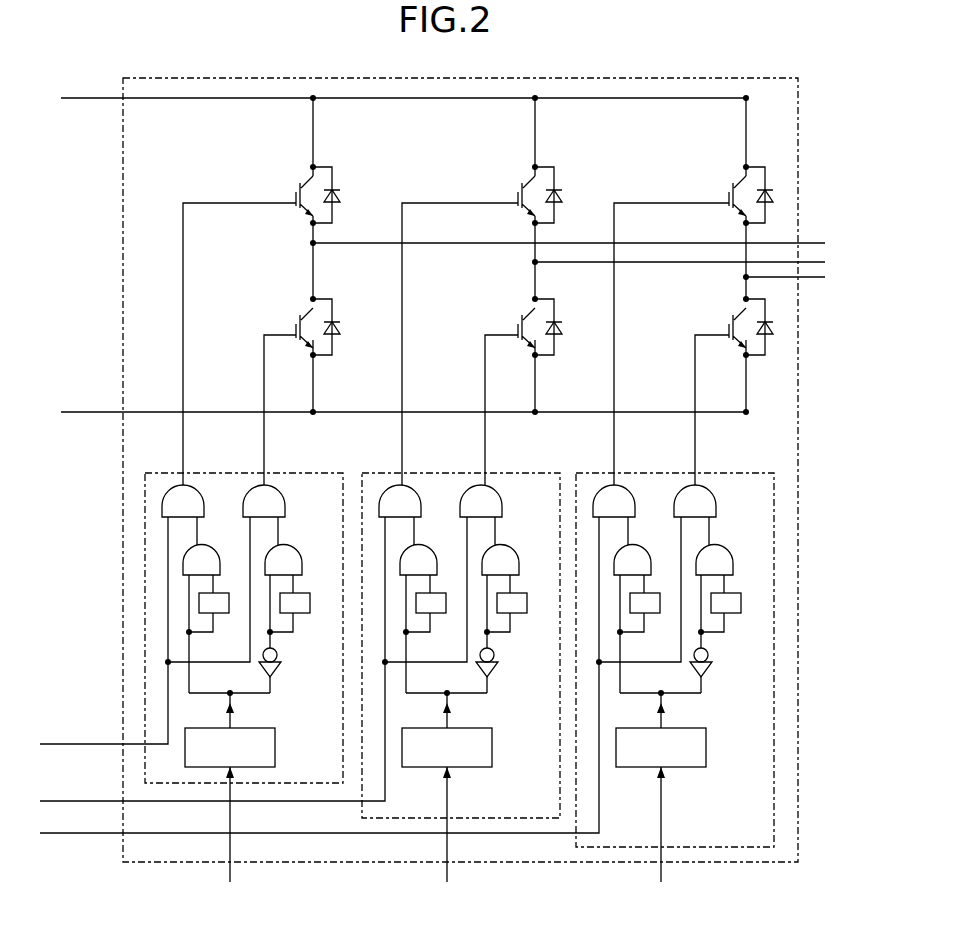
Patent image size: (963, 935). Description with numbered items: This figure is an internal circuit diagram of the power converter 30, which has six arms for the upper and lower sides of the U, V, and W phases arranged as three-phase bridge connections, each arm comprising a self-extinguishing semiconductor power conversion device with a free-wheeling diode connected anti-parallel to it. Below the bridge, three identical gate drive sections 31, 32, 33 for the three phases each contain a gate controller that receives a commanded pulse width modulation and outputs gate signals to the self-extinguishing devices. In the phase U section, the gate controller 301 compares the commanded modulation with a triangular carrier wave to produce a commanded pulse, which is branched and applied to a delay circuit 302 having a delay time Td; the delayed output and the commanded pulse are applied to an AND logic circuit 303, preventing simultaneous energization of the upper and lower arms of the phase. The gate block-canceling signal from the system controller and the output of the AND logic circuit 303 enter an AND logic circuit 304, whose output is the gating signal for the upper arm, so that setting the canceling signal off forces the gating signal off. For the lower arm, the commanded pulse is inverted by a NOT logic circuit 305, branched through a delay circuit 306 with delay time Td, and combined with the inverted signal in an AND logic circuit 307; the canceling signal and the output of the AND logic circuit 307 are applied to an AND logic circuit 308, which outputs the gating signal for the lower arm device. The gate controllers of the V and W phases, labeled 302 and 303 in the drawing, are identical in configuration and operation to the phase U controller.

The power converter 30 is at (799, 121).
The U-phase gate drive circuit 31 is at (318, 473).
The V-phase gate drive circuit 32 is at (532, 473).
The W-phase gate drive circuit 33 is at (750, 473).
The gate controller 301 is at (275, 748).
The delay circuit 302 is at (229, 613).
The AND logic circuit 303 is at (225, 533).
The AND logic circuit 304 is at (190, 484).
The NOT logic circuit 305 is at (279, 672).
The delay circuit 306 is at (310, 613).
The AND logic circuit 307 is at (302, 533).
The AND logic circuit 308 is at (272, 484).